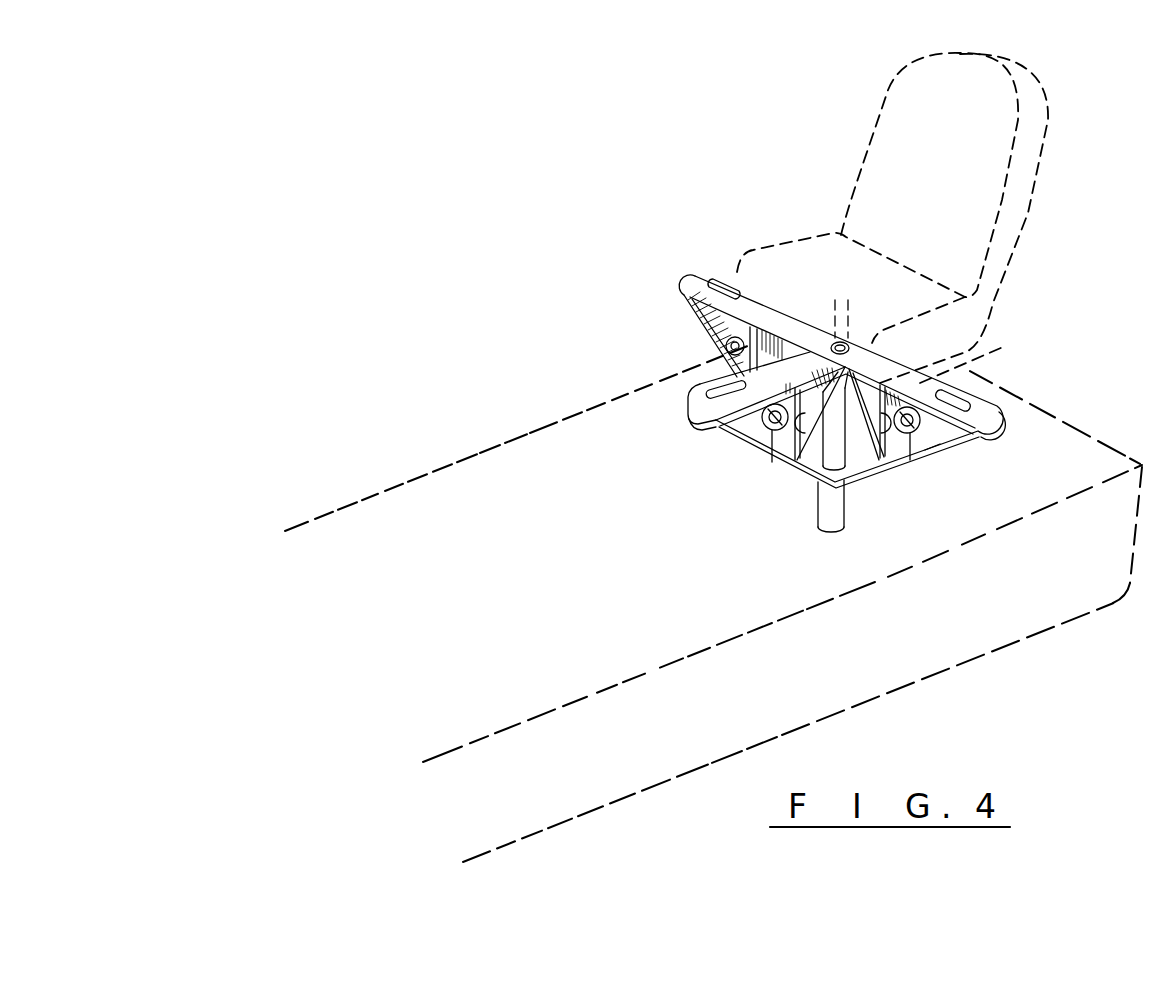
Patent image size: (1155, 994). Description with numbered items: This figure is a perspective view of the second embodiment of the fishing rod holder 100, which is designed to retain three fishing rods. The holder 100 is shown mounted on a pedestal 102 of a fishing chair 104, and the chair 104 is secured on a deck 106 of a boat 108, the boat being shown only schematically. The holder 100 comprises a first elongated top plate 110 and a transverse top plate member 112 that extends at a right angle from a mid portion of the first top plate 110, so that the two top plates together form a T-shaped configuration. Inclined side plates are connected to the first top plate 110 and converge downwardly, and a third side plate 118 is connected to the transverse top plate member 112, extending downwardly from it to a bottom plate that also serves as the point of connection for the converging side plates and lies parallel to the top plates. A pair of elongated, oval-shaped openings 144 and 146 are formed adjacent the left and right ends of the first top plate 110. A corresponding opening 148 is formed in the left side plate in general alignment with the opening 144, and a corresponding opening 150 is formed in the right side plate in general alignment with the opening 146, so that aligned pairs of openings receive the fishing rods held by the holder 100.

The fishing rod holder 100 is at (860, 394).
The pedestal 102 is at (846, 504).
The fishing chair 104 is at (1027, 120).
The deck 106 is at (597, 626).
The boat 108 is at (1031, 615).
The first elongated top plate 110 is at (995, 351).
The transverse top plate member 112 is at (762, 384).
The third side plate 118 is at (773, 461).
The elongated oval-shaped opening 144 is at (727, 282).
The elongated oval-shaped opening 146 is at (958, 393).
The corresponding opening 148 is at (728, 344).
The corresponding opening 150 is at (933, 447).